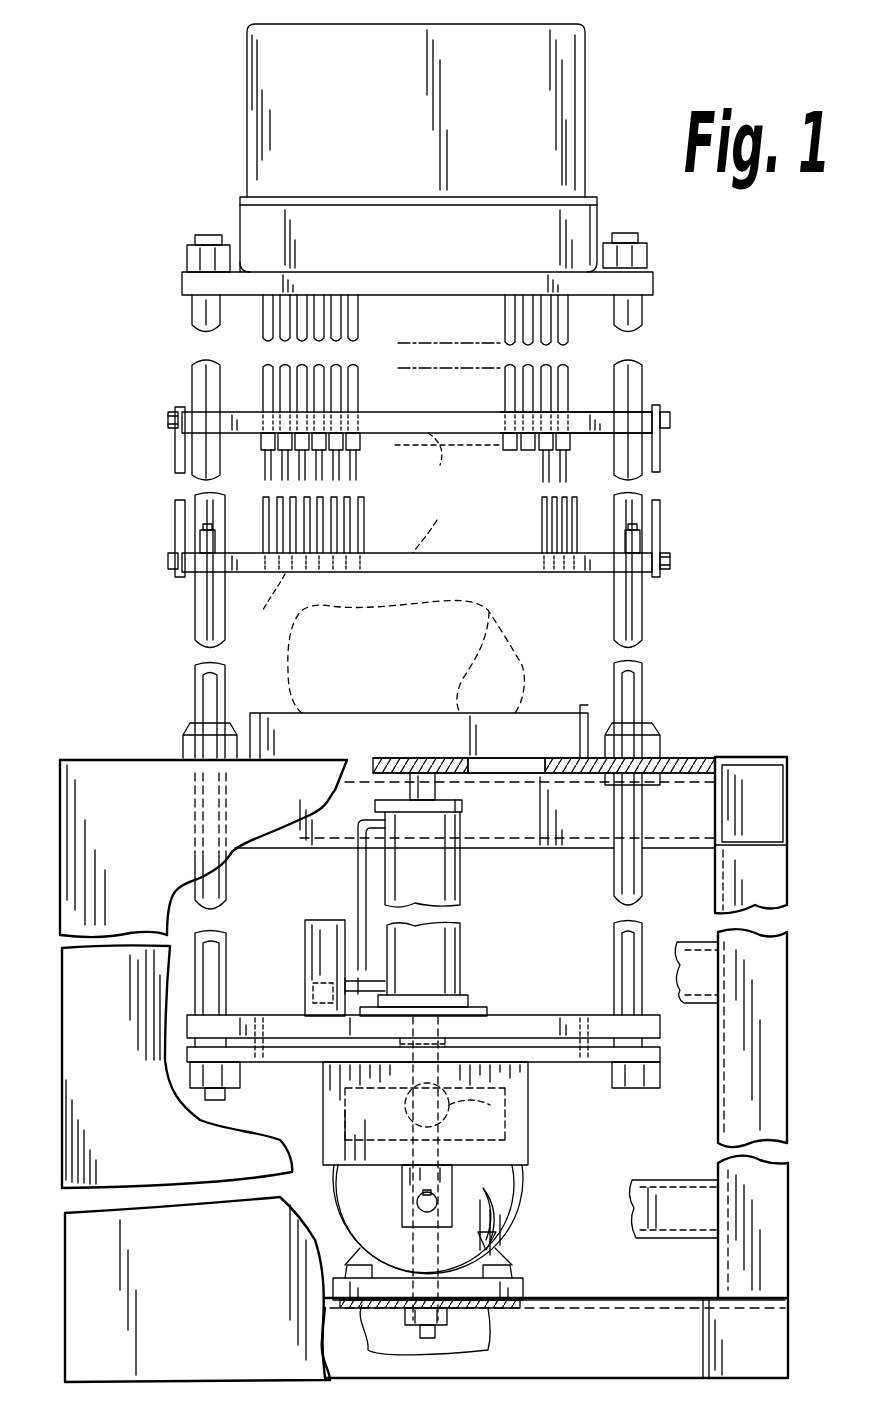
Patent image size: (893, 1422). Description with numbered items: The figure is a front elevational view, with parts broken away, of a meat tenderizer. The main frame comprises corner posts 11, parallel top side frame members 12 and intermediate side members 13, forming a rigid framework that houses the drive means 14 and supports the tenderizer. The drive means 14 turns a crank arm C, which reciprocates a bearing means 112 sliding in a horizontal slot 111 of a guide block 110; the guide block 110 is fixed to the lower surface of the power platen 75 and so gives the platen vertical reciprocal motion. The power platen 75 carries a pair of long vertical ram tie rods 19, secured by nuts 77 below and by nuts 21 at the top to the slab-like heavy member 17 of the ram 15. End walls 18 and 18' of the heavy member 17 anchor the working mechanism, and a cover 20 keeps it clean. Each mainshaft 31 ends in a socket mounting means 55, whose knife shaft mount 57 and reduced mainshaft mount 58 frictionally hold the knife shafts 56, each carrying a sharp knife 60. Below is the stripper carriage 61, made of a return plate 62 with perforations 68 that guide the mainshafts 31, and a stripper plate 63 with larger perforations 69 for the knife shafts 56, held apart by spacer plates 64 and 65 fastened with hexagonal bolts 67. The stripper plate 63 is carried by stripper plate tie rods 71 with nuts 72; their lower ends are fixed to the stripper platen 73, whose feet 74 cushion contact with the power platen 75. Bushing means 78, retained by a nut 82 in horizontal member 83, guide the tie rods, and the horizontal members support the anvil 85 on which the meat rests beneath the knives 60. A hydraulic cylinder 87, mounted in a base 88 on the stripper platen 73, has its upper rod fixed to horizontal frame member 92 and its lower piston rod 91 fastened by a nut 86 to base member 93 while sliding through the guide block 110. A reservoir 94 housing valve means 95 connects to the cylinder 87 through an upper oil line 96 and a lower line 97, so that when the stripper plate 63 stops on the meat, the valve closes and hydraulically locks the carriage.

The corner posts 11 is at (787, 978).
The top side frame members 12 is at (765, 757).
The intermediate side members 13 is at (700, 1005).
The drive means 14 is at (545, 1165).
The ram 15 is at (608, 190).
The heavy member 17 is at (485, 283).
The end wall 18 is at (388, 228).
The end wall 18' is at (628, 232).
The ram tie rods 19 is at (200, 375).
The cover 20 is at (247, 103).
The nuts 21 is at (192, 250).
The mainshaft 31 is at (285, 322).
The mounting means 55 is at (500, 455).
The knife shafts 56 is at (268, 478).
The knife shaft mount 57 is at (362, 442).
The mainshaft mount 58 is at (380, 440).
The knife 60 is at (382, 643).
The stripper carriage 61 is at (678, 435).
The return plate 62 is at (594, 422).
The stripper plate 63 is at (532, 572).
The spacer plate 64 is at (178, 462).
The spacer plate 65 is at (660, 515).
The hexagonal bolts 67 is at (170, 420).
The perforations 68 is at (447, 458).
The perforations 69 is at (430, 530).
The stripper plate tie rods 71 is at (205, 610).
The nuts 72 is at (200, 540).
The stripper platen 73 is at (528, 1015).
The feet 74 is at (256, 1050).
The power platen 75 is at (605, 1062).
The nuts 77 is at (200, 1080).
The bushing means 78 is at (190, 725).
The nut 82 is at (645, 790).
The horizontal member 83 is at (700, 758).
The anvil 85 is at (545, 712).
The nut 86 is at (447, 1318).
The hydraulic cylinder 87 is at (455, 887).
The base 88 is at (472, 1005).
The lower piston rod 91 is at (410, 1240).
The horizontal frame member 92 is at (462, 773).
The base member 93 is at (665, 1300).
The reservoir 94 is at (305, 957).
The valve means 95 is at (305, 1000).
The upper oil line 96 is at (358, 868).
The lower line 97 is at (372, 982).
The guide block 110 is at (323, 1130).
The horizontal slot 111 is at (322, 1100).
The bearing means 112 is at (466, 1105).
The crank arm C is at (405, 1190).